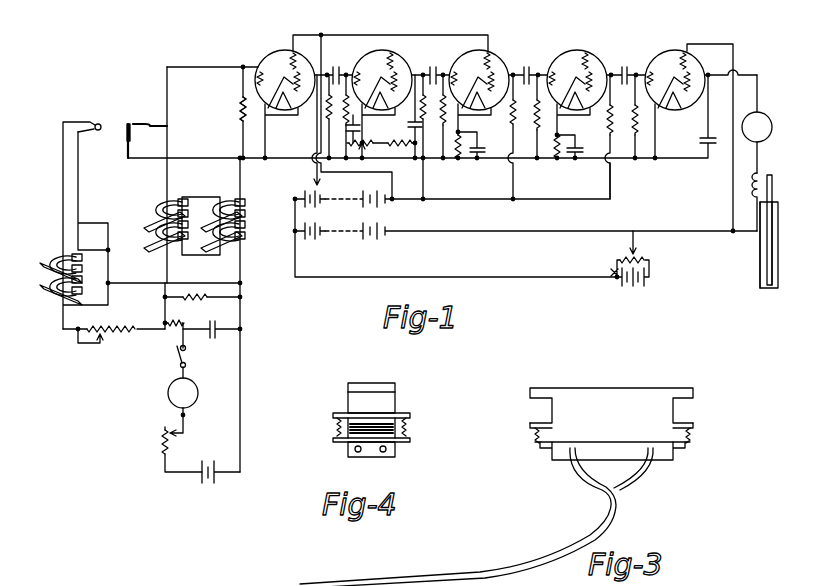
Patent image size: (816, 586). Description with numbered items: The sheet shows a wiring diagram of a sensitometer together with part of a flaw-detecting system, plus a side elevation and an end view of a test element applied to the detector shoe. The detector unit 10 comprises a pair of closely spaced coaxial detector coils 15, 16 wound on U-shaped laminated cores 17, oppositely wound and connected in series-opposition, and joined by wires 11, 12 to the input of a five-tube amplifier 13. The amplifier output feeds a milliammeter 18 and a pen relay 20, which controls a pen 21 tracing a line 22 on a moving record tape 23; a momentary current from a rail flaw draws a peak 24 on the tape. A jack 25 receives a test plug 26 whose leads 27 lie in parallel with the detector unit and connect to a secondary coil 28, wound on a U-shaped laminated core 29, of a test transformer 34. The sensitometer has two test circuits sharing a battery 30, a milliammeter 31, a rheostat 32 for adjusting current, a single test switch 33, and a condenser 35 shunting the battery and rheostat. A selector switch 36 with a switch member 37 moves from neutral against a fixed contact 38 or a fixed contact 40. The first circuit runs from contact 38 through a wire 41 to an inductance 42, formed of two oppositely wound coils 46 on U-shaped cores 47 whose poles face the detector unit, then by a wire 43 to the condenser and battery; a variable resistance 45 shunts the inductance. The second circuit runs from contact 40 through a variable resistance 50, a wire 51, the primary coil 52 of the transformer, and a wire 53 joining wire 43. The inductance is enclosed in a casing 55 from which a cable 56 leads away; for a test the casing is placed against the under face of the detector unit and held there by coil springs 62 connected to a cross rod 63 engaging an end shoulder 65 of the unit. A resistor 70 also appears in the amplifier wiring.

In FIG. 1, the detector unit 10 is at (253, 210).
In FIG. 4, the detector unit 10 is at (394, 398).
In FIG. 3, the detector unit 10 is at (610, 402).
In FIG. 1, the wire 11 is at (168, 172).
In FIG. 1, the wire 12 is at (240, 182).
In FIG. 1, the five-tube amplifier 13 is at (512, 48).
In FIG. 1, the detector coil 15 is at (175, 207).
In FIG. 1, the detector coil 16 is at (237, 207).
In FIG. 1, the U-shaped laminated core 17 is at (153, 212).
In FIG. 1, the milliammeter 18 is at (772, 124).
In FIG. 1, the pen relay 20 is at (747, 180).
In FIG. 1, the pen 21 is at (774, 195).
In FIG. 1, the line 22 is at (767, 274).
In FIG. 1, the record tape 23 is at (760, 263).
In FIG. 1, the peak 24 is at (760, 247).
In FIG. 1, the jack 25 is at (136, 137).
In FIG. 1, the test plug 26 is at (90, 136).
In FIG. 1, the leads 27 is at (63, 187).
In FIG. 1, the secondary coil 28 is at (74, 258).
In FIG. 1, the U-shaped laminated core 29 is at (48, 266).
In FIG. 1, the battery 30 is at (220, 462).
In FIG. 1, the milliammeter 31 is at (168, 391).
In FIG. 1, the rheostat 32 is at (165, 446).
In FIG. 1, the test switch 33 is at (177, 362).
In FIG. 1, the test transformer 34 is at (35, 285).
In FIG. 1, the condenser 35 is at (227, 334).
In FIG. 1, the selector switch 36 is at (175, 334).
In FIG. 1, the switch member 37 is at (170, 323).
In FIG. 1, the fixed contact 38 is at (165, 305).
In FIG. 1, the fixed contact 40 is at (164, 323).
In FIG. 1, the wire 41 is at (165, 267).
In FIG. 1, the inductance 42 is at (259, 255).
In FIG. 1, the wire 43 is at (241, 287).
In FIG. 1, the variable resistance 45 is at (200, 297).
In FIG. 1, the coil 46 is at (222, 255).
In FIG. 1, the U-shaped core 47 is at (153, 241).
In FIG. 1, the variable resistance 50 is at (102, 343).
In FIG. 1, the wire 51 is at (60, 331).
In FIG. 1, the primary coil 52 is at (72, 300).
In FIG. 1, the wire 53 is at (125, 283).
In FIG. 4, the casing 55 is at (384, 457).
In FIG. 3, the casing 55 is at (636, 455).
In FIG. 3, the cable 56 is at (598, 520).
In FIG. 4, the coil spring 62 is at (334, 422).
In FIG. 3, the coil spring 62 is at (534, 430).
In FIG. 3, the cross rod 63 is at (537, 420).
In FIG. 3, the end shoulder 65 is at (692, 426).
In FIG. 1, the resistor 70 is at (240, 116).